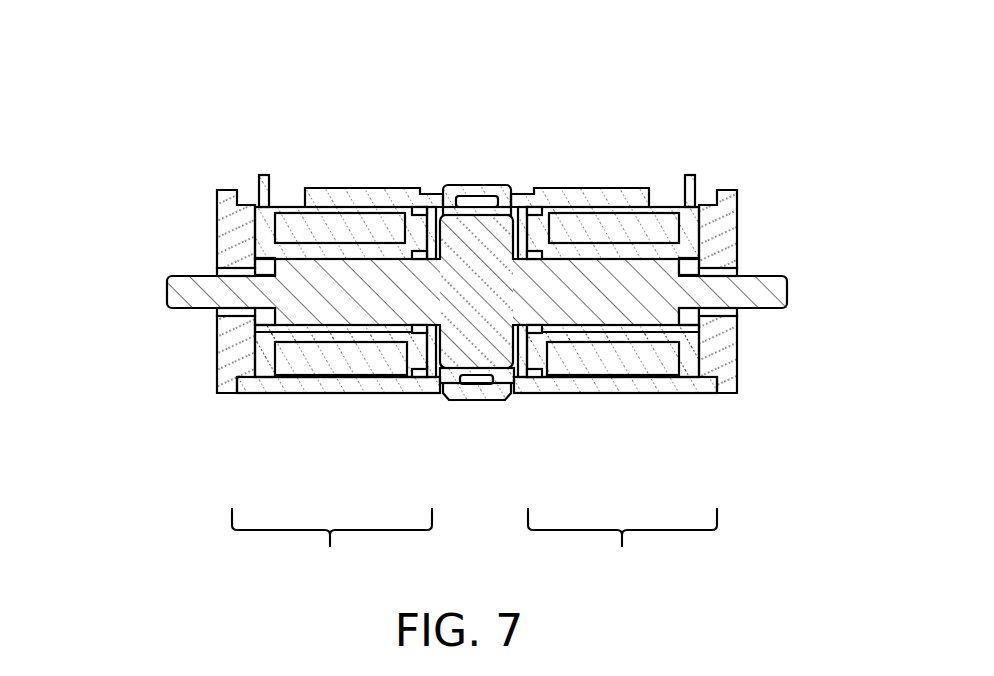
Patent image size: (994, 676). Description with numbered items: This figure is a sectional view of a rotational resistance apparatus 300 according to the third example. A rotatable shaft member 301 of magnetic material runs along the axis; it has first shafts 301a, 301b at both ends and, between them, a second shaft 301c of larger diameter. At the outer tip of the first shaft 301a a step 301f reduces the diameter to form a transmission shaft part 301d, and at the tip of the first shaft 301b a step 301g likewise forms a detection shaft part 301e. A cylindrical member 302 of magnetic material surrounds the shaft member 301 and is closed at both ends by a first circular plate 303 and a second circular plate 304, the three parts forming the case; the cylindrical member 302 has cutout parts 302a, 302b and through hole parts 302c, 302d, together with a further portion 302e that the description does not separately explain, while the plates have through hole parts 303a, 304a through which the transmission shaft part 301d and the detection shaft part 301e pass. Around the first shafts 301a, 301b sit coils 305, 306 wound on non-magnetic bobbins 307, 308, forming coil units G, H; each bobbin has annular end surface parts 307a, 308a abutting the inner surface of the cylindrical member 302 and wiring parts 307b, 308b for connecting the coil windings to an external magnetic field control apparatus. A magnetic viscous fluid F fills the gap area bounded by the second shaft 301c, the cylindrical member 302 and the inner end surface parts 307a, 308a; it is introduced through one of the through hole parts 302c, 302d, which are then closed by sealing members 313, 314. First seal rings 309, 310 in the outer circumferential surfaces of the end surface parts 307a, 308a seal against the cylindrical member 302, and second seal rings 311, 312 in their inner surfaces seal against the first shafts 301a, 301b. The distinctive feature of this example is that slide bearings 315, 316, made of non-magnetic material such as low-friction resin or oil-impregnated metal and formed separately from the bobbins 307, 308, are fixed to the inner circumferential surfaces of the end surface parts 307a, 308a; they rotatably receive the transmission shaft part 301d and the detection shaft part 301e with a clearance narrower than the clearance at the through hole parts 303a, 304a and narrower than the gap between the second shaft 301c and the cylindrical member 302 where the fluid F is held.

The rotational resistance apparatus 300 is at (188, 397).
The shaft member 301 is at (166, 279).
The first shaft 301a is at (390, 255).
The first shaft 301b is at (584, 261).
The second shaft 301c is at (477, 213).
The transmission shaft part 301d is at (217, 243).
The detection shaft part 301e is at (763, 274).
The step 301f is at (278, 264).
The step 301g is at (674, 264).
The cylindrical member 302 is at (358, 188).
The cutout part 302a is at (302, 190).
The cutout part 302b is at (653, 197).
The through hole part 302c is at (456, 203).
The through hole part 302d is at (457, 381).
The housing wall 302e is at (514, 188).
The first circular plate 303 is at (228, 188).
The through hole part 303a is at (238, 267).
The second circular plate 304 is at (723, 188).
The through hole part 304a is at (715, 270).
The coil 305 is at (316, 360).
The coil 306 is at (635, 360).
The bobbin 307 is at (345, 330).
The end surface part 307a is at (403, 352).
The wiring part 307b is at (265, 175).
The bobbin 308 is at (622, 357).
The end surface part 308a is at (577, 352).
The wiring part 308b is at (690, 175).
The first seal ring 309 is at (418, 378).
The first seal ring 310 is at (535, 383).
The second seal ring 311 is at (428, 383).
The second seal ring 312 is at (530, 380).
The sealing member 313 is at (450, 185).
The sealing member 314 is at (478, 400).
The slide bearing 315 is at (266, 336).
The slide bearing 316 is at (684, 338).
The MR fluid F is at (503, 185).
The coil unit G is at (332, 545).
The coil unit H is at (622, 545).